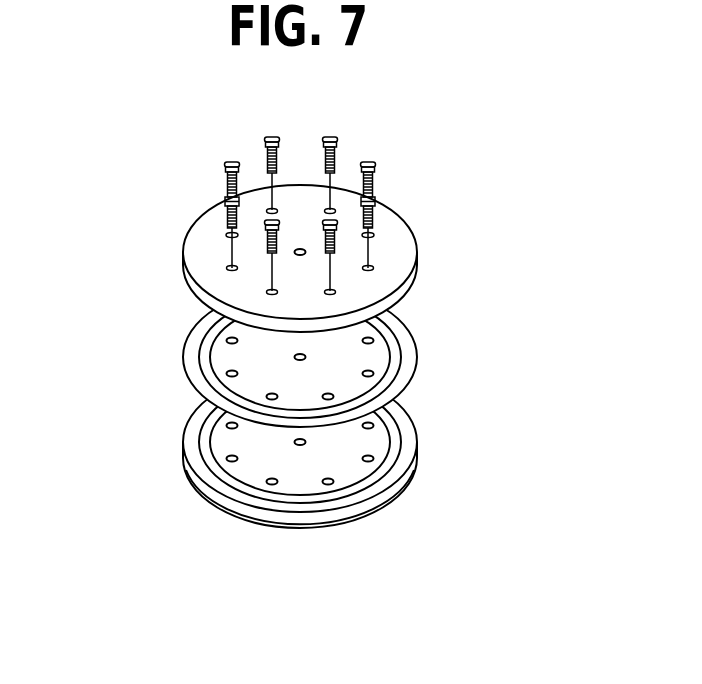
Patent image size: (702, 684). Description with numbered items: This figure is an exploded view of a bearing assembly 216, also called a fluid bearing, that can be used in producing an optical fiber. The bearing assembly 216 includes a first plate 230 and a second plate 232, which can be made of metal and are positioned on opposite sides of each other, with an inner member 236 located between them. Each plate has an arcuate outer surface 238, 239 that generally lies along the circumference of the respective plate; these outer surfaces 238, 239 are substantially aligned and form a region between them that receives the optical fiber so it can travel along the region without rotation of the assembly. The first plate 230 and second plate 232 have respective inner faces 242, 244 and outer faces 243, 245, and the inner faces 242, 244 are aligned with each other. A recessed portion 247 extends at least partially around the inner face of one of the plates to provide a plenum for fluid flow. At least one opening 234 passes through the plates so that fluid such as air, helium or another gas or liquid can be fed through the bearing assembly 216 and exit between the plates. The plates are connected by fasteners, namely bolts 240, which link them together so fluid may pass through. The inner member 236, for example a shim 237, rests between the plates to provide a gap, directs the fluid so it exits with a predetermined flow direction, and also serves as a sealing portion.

The bearing assembly 216 is at (332, 350).
The first plate 230 is at (289, 237).
The second plate 232 is at (308, 478).
The opening 234 is at (300, 249).
The inner member 236 is at (311, 357).
The shim 237 is at (195, 358).
The arcuate outer surface 238 is at (416, 270).
The arcuate outer surface 239 is at (300, 450).
The bolts 240 is at (340, 146).
The inner face 242 is at (183, 289).
The outer face 243 is at (210, 227).
The inner face 244 is at (300, 477).
The outer face 245 is at (300, 497).
The recessed portion 247 is at (416, 478).